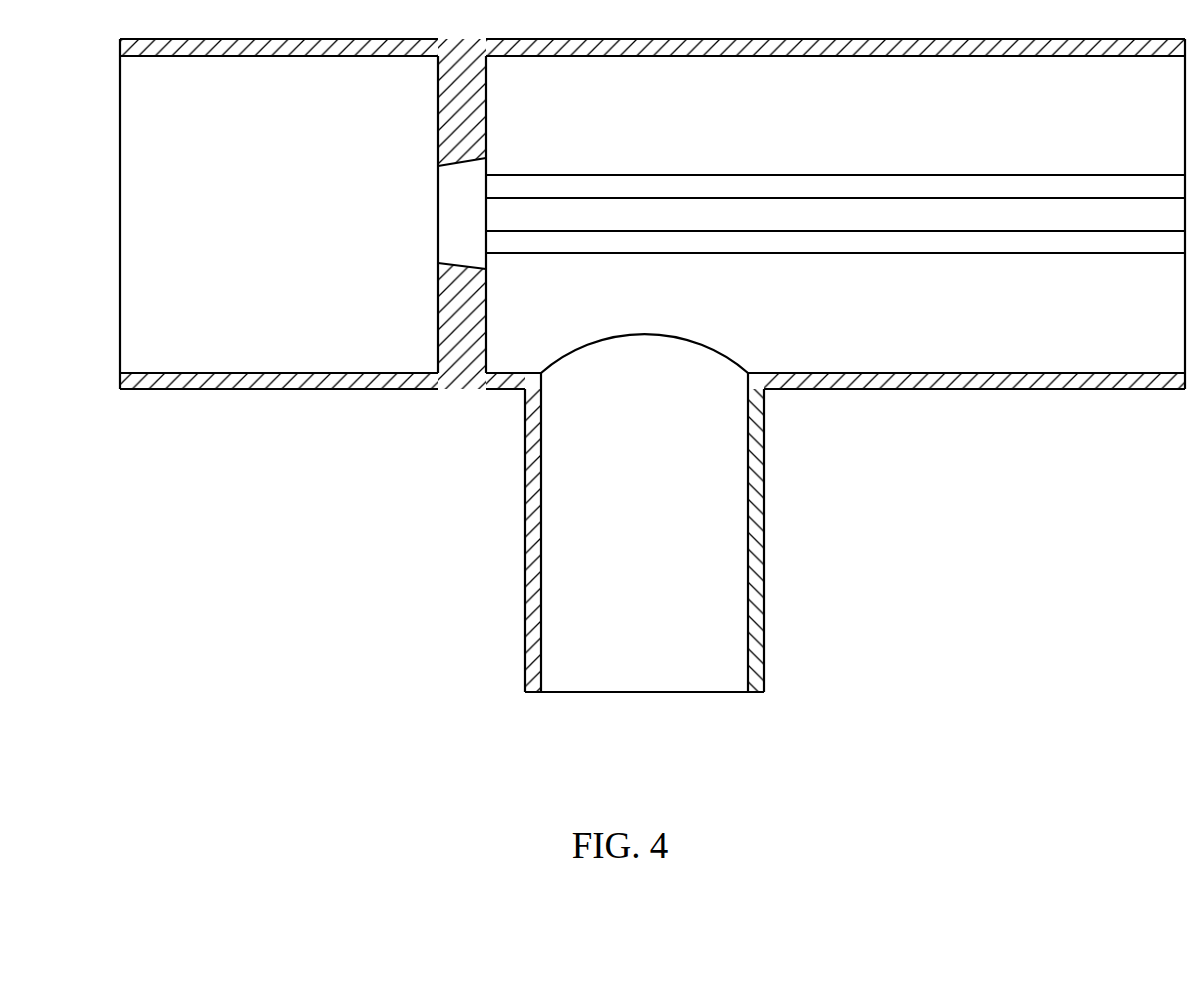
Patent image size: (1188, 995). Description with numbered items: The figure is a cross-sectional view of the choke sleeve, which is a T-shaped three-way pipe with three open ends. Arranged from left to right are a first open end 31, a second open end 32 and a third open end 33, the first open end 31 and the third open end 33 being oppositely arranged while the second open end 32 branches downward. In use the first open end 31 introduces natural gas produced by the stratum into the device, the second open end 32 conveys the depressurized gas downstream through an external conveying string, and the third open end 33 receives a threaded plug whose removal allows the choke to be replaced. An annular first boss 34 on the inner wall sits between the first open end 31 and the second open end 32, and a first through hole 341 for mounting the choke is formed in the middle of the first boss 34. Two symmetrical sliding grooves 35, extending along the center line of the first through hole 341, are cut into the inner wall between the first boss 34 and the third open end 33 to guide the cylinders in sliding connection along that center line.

The first open end 31 is at (120, 217).
The second open end 32 is at (648, 690).
The third open end 33 is at (1185, 317).
The first boss 34 is at (463, 317).
The first through hole 341 is at (463, 207).
The sliding grooves 35 is at (1075, 213).